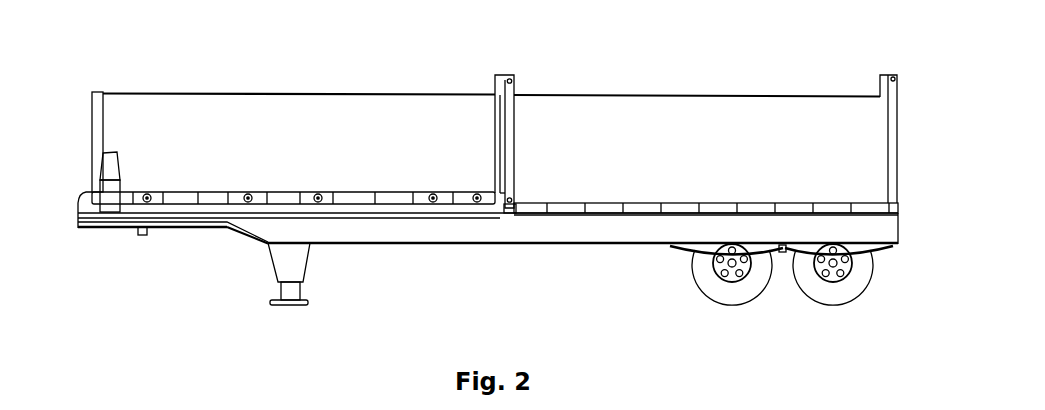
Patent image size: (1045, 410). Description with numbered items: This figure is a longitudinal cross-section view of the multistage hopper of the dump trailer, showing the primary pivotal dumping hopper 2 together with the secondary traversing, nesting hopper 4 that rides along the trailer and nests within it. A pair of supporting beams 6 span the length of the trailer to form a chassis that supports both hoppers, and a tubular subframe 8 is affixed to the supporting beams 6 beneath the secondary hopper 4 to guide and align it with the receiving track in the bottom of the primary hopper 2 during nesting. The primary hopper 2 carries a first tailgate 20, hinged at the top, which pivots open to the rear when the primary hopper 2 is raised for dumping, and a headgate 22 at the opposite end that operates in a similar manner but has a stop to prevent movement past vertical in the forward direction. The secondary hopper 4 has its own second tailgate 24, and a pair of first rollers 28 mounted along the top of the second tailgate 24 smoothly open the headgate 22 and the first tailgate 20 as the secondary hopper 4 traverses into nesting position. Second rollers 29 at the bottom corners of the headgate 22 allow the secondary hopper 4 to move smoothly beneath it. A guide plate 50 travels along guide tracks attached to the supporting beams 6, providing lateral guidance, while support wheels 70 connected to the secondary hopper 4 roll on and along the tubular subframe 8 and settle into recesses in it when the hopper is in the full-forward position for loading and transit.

The primary pivotal dumping hopper 2 is at (624, 95).
The secondary traversing, nesting hopper 4 is at (300, 93).
The supporting beams 6 is at (632, 246).
The tubular subframe 8 is at (78, 203).
The first tailgate 20 is at (901, 108).
The headgate 22 is at (515, 158).
The second tailgate 24 is at (497, 148).
The first rollers 28 is at (497, 93).
The second rollers 29 is at (509, 213).
The guide plate 50 is at (110, 174).
The support wheels 70 is at (250, 193).